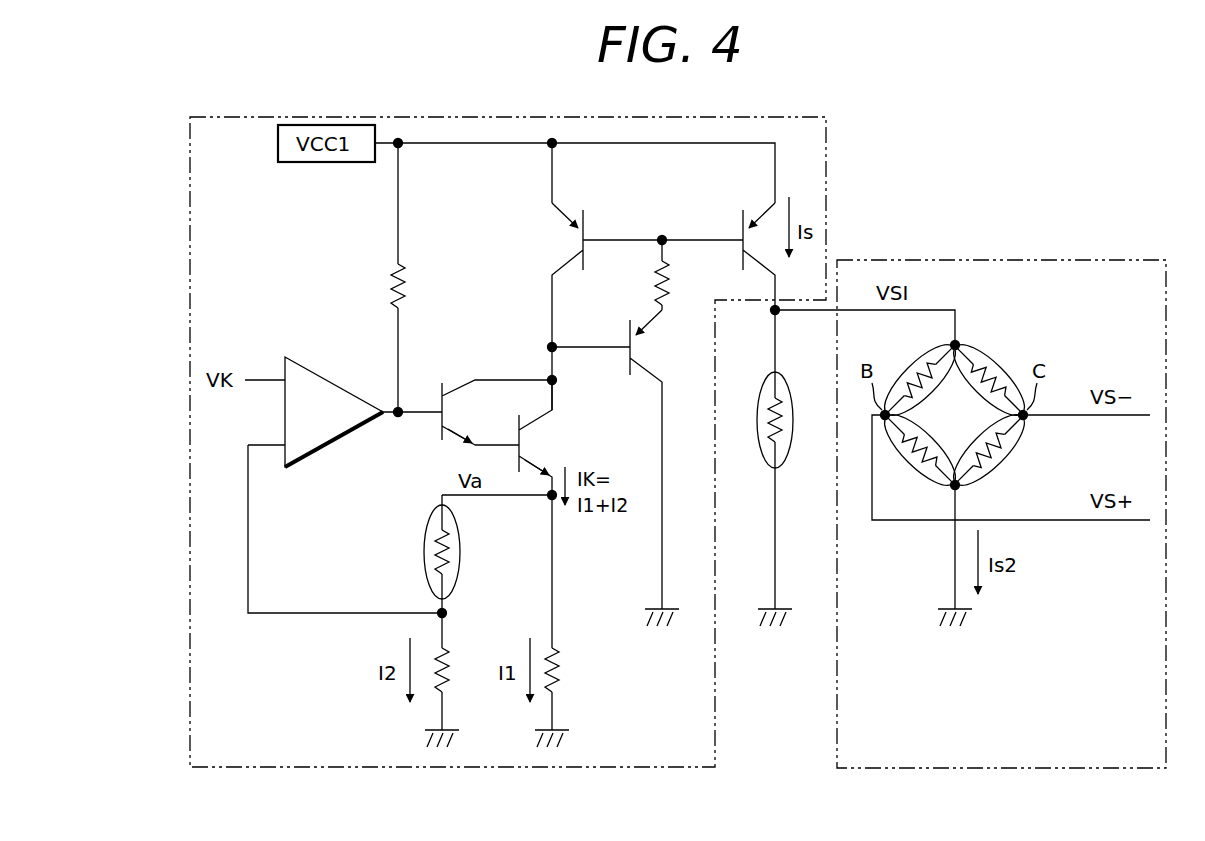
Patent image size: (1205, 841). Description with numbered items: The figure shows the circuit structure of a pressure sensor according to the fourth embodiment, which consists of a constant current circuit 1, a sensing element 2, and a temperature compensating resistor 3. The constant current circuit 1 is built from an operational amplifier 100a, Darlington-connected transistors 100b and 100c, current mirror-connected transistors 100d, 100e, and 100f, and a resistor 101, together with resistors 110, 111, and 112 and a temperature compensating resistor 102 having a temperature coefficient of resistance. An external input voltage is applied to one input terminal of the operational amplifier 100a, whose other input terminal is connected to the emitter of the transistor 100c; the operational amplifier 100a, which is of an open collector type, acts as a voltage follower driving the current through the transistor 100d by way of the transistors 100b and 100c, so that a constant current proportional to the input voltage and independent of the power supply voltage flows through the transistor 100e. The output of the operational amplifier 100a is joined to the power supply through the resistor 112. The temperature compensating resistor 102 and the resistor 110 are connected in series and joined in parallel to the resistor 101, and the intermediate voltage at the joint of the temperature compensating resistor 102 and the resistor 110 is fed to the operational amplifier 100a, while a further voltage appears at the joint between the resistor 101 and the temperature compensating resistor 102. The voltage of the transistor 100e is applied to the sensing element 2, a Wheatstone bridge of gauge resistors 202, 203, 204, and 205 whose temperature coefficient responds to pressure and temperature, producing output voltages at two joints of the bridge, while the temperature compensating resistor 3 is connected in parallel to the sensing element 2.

The constant current circuit 1 is at (826, 160).
The sensing element 2 is at (990, 260).
The temperature compensating resistor 3 is at (780, 385).
The operational amplifier 100a is at (335, 382).
The transistor 100b is at (437, 388).
The transistor 100c is at (515, 440).
The transistor 100d is at (566, 222).
The transistor 100e is at (752, 222).
The transistor 100f is at (632, 320).
The resistor 101 is at (565, 670).
The temperature compensating resistor 102 is at (462, 550).
The resistor 110 is at (455, 670).
The resistor 111 is at (672, 290).
The resistor 112 is at (390, 286).
The gauge resistor 202 is at (896, 380).
The gauge resistor 203 is at (1010, 380).
The gauge resistor 204 is at (902, 466).
The gauge resistor 205 is at (1006, 466).